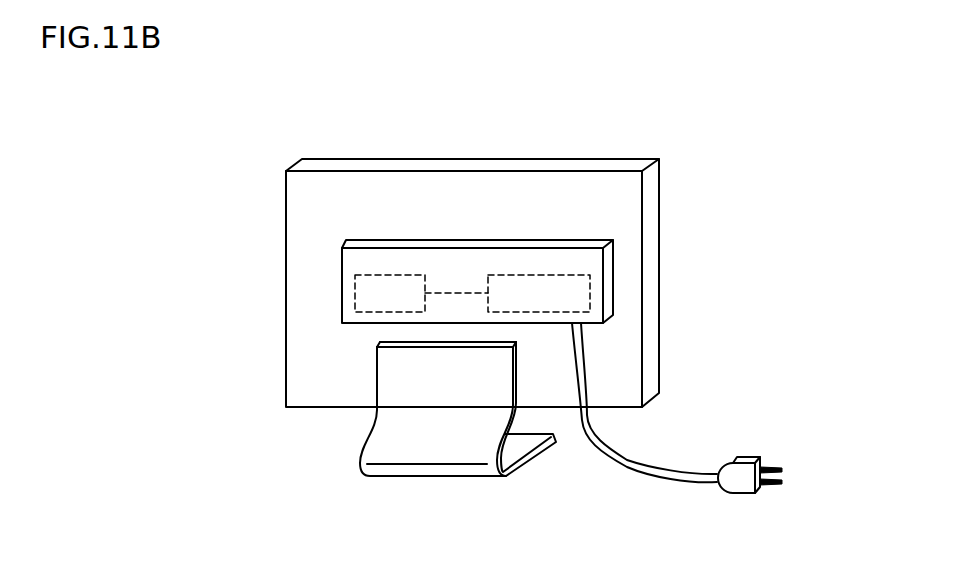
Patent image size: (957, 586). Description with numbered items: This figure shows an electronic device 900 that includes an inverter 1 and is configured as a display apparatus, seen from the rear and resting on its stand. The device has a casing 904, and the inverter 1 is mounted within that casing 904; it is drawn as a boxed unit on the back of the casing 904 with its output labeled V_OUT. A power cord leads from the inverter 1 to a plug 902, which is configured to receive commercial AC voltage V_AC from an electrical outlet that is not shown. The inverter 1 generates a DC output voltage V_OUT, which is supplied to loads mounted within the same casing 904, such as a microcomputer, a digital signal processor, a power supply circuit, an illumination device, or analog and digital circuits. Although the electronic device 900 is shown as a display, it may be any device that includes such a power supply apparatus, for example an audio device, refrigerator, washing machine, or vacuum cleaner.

The electronic device 900 is at (556, 326).
The casing 904 is at (530, 192).
The inverter 1 is at (573, 293).
The plug 902 is at (737, 485).